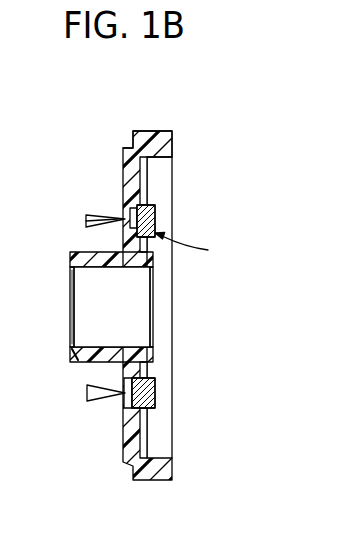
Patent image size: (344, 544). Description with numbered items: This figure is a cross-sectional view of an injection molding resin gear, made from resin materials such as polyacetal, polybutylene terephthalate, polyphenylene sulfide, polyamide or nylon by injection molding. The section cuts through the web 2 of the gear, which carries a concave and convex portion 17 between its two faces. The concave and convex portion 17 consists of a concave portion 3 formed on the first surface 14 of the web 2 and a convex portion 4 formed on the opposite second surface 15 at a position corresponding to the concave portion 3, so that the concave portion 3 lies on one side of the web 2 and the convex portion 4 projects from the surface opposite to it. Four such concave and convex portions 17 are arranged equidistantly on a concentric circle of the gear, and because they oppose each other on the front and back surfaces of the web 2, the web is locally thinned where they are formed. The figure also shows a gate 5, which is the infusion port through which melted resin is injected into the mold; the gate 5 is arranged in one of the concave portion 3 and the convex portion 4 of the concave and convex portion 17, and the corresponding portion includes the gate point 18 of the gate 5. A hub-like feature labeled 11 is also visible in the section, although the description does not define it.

The web 2 is at (132, 446).
The concave portion 3 is at (124, 211).
The convex portion 4 is at (147, 214).
The gate 5 is at (86, 221).
The hub 11 is at (71, 361).
The first surface 14 is at (122, 164).
The second surface 15 is at (145, 174).
The concave and convex portion 17 is at (191, 247).
The gate point 18 is at (124, 402).